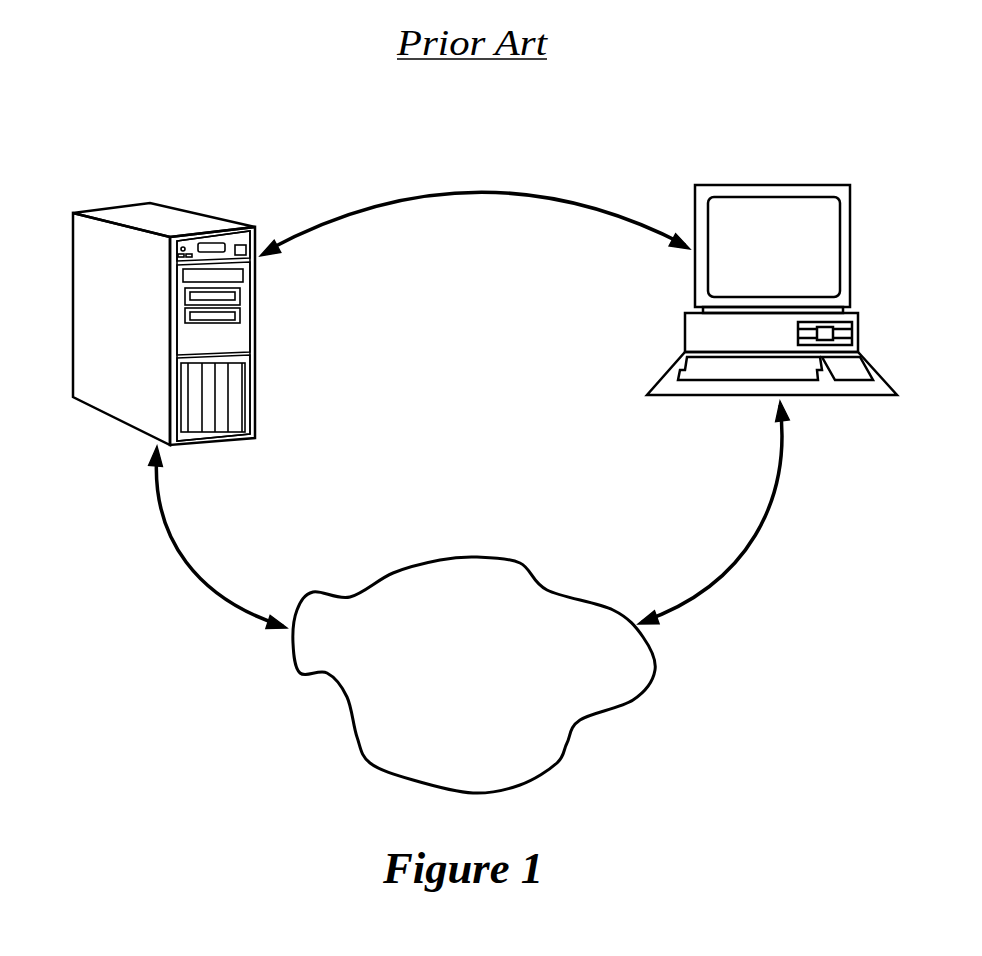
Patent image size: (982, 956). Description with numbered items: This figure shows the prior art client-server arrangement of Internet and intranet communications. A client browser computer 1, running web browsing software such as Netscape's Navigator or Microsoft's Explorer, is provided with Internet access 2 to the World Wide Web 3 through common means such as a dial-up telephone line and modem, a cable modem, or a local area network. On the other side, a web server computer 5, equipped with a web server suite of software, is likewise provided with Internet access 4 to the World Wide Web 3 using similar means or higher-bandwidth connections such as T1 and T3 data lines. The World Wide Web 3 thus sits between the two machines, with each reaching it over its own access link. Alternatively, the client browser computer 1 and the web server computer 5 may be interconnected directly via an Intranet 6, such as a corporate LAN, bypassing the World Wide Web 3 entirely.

The client browser computer 1 is at (862, 305).
The Internet access 2 is at (720, 583).
The World Wide Web 3 is at (530, 570).
The Internet access 4 is at (197, 578).
The web server computer 5 is at (255, 347).
The Intranet 6 is at (478, 192).